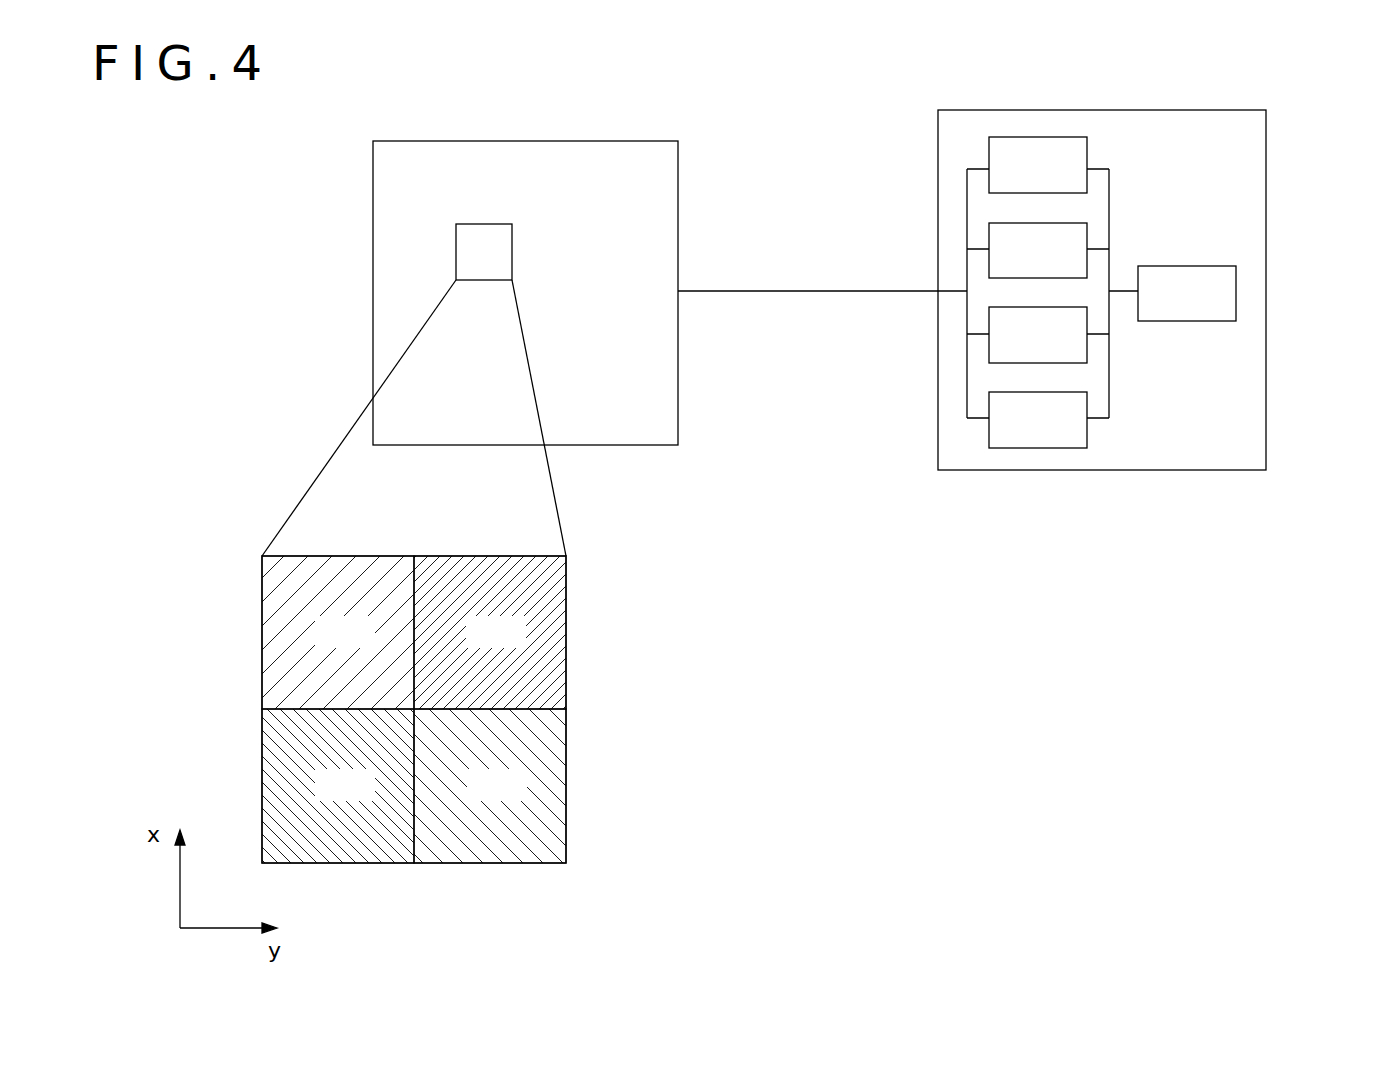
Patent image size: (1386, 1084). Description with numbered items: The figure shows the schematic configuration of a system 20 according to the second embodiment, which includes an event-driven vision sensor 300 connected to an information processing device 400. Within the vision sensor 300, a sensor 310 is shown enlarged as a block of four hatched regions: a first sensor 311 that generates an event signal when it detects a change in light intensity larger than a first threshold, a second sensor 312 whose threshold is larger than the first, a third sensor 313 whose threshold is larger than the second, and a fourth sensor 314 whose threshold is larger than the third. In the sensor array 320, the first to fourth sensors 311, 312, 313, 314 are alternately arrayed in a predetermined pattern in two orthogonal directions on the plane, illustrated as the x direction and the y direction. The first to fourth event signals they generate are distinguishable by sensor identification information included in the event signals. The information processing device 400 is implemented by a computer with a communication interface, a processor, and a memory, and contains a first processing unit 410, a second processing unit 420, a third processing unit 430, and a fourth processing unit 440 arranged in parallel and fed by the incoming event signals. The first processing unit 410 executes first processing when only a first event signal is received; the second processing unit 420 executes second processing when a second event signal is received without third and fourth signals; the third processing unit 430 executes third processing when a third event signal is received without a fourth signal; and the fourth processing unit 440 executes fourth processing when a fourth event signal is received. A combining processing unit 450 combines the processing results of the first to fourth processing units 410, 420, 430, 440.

The system 20 is at (826, 153).
The event-driven vision sensor 300 is at (373, 238).
The sensor 310 is at (573, 557).
The first sensor 311 is at (366, 644).
The second sensor 312 is at (517, 644).
The third sensor 313 is at (366, 797).
The fourth sensor 314 is at (518, 797).
The sensor array 320 is at (652, 220).
The information processing device 400 is at (1266, 170).
The first processing unit 410 is at (1087, 157).
The second processing unit 420 is at (1087, 232).
The third processing unit 430 is at (1087, 355).
The fourth processing unit 440 is at (1087, 440).
The combining processing unit 450 is at (1236, 296).